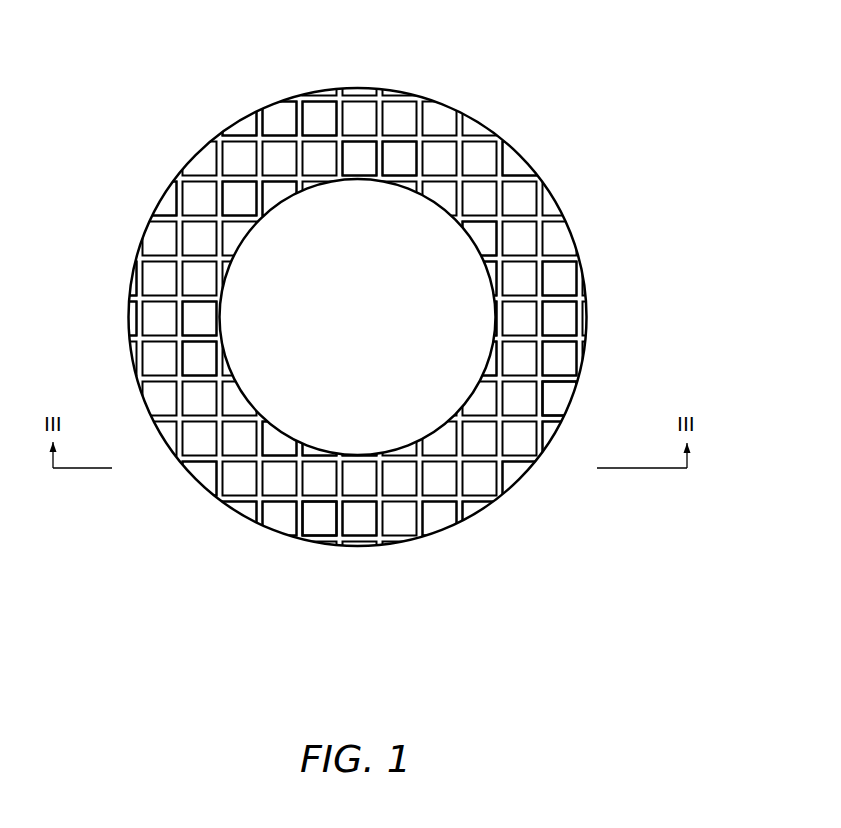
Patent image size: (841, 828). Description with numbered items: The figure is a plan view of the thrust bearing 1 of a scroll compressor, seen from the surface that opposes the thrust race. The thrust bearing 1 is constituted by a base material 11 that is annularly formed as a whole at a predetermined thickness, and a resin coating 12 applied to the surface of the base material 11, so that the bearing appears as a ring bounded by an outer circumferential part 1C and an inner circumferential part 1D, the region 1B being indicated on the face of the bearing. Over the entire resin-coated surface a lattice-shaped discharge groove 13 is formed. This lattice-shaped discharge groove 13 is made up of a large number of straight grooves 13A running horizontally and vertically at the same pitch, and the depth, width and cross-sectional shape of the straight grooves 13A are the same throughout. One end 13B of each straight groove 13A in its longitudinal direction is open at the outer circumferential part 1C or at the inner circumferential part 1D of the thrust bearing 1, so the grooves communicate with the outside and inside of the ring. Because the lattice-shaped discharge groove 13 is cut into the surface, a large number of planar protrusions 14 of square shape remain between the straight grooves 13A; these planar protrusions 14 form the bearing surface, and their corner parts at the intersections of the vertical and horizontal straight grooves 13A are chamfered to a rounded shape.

The thrust bearing 1 is at (550, 173).
The outer peripheral region 1B is at (512, 167).
The outer circumferential part 1C is at (553, 438).
The inner circumferential part 1D is at (285, 432).
The base material 11 is at (580, 250).
The resin coating 12 is at (555, 403).
The lattice-shaped discharge groove 13 is at (445, 103).
The straight grooves 13A is at (253, 120).
The one end 13B is at (138, 257).
The planar protrusions 14 is at (320, 120).